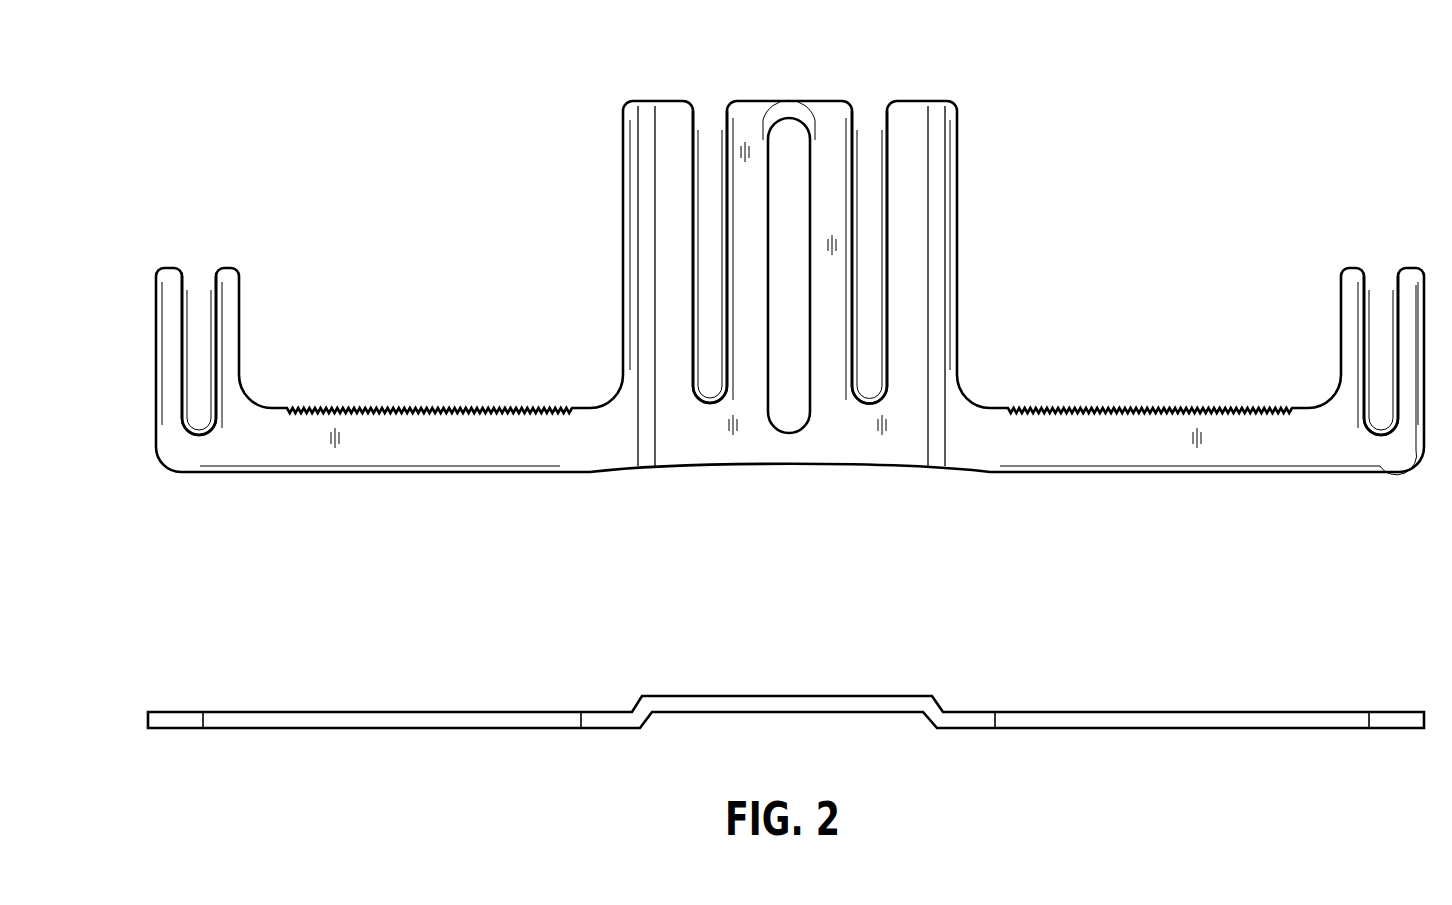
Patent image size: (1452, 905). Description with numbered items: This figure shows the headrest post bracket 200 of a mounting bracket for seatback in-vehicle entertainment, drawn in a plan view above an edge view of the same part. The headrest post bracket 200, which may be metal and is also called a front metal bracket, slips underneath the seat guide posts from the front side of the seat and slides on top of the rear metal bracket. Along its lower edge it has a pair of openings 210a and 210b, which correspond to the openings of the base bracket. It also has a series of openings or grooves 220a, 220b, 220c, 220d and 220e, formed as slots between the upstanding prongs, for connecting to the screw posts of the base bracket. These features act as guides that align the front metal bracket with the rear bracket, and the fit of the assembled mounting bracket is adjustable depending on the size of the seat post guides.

The headrest post bracket 200 is at (418, 494).
The opening 210a is at (398, 392).
The opening 210b is at (1125, 393).
The opening/groove 220a is at (198, 388).
The opening/groove 220b is at (710, 138).
The opening/groove 220c is at (793, 410).
The opening/groove 220d is at (873, 115).
The opening/groove 220e is at (1384, 276).